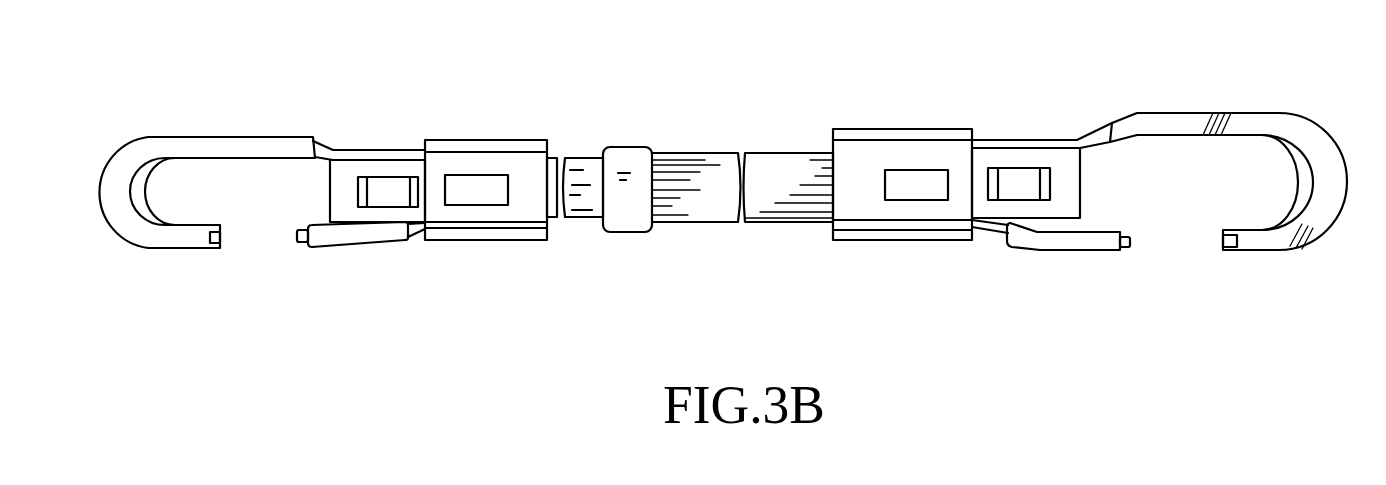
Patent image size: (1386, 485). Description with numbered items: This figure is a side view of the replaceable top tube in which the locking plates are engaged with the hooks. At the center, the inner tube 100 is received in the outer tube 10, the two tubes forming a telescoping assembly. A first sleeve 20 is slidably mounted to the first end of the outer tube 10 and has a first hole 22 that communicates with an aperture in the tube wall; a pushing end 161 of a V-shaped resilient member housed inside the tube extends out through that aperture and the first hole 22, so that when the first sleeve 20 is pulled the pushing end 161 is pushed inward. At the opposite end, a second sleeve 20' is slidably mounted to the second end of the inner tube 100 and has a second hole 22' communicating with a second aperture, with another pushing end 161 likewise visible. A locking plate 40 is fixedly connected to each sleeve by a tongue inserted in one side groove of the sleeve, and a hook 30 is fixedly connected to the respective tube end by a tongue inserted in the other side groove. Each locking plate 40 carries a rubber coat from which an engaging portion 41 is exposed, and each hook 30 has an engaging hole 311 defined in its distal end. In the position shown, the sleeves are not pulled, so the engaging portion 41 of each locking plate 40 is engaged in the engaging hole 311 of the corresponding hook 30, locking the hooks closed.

The outer tube 10 is at (710, 160).
The inner tube 100 is at (583, 208).
The first sleeve 20 is at (902, 138).
The second sleeve 20' is at (491, 145).
The first hole 22 is at (916, 239).
The second hole 22' is at (476, 249).
The pushing end 161 is at (383, 187).
The first hook 30 is at (157, 145).
The engaging hole 311 is at (205, 236).
The locking plate 40 is at (357, 237).
The engaging portion 41 is at (297, 234).